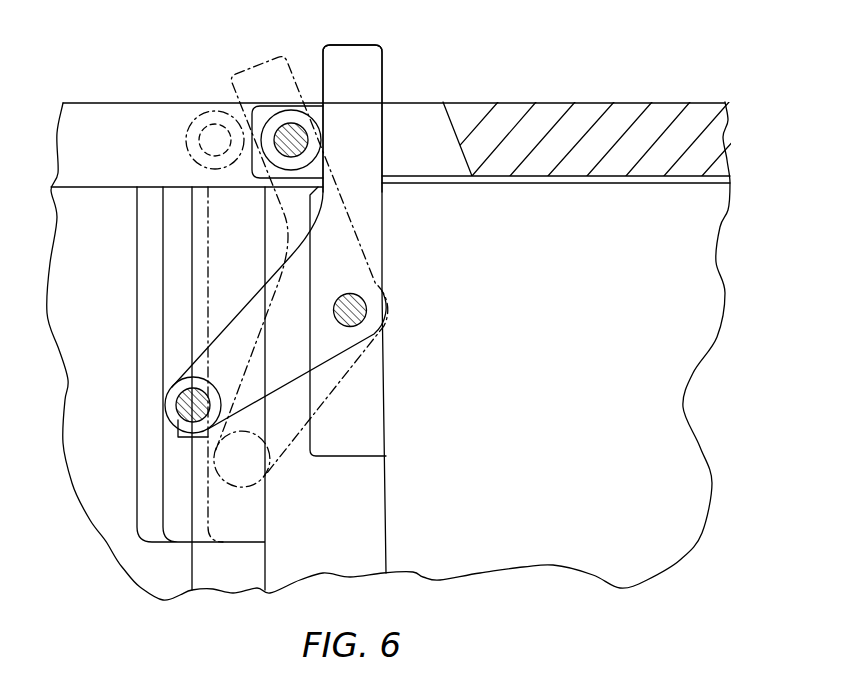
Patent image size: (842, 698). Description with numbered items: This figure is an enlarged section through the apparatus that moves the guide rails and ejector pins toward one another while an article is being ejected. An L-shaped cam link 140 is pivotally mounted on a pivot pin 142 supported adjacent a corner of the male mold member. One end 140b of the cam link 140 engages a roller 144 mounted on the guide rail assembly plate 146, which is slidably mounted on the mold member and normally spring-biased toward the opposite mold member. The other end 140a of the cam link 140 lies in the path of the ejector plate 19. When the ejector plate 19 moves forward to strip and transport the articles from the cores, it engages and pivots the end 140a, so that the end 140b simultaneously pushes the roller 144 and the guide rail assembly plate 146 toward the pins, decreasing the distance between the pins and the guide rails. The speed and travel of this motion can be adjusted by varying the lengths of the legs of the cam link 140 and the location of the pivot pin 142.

The ejector plate 19 is at (105, 222).
The L-shaped cam link 140 is at (368, 60).
The cam link end 140a is at (180, 384).
The cam link end 140b is at (345, 128).
The pivot pin 142 is at (366, 300).
The roller 144 is at (291, 123).
The guide rail assembly plate 146 is at (630, 193).